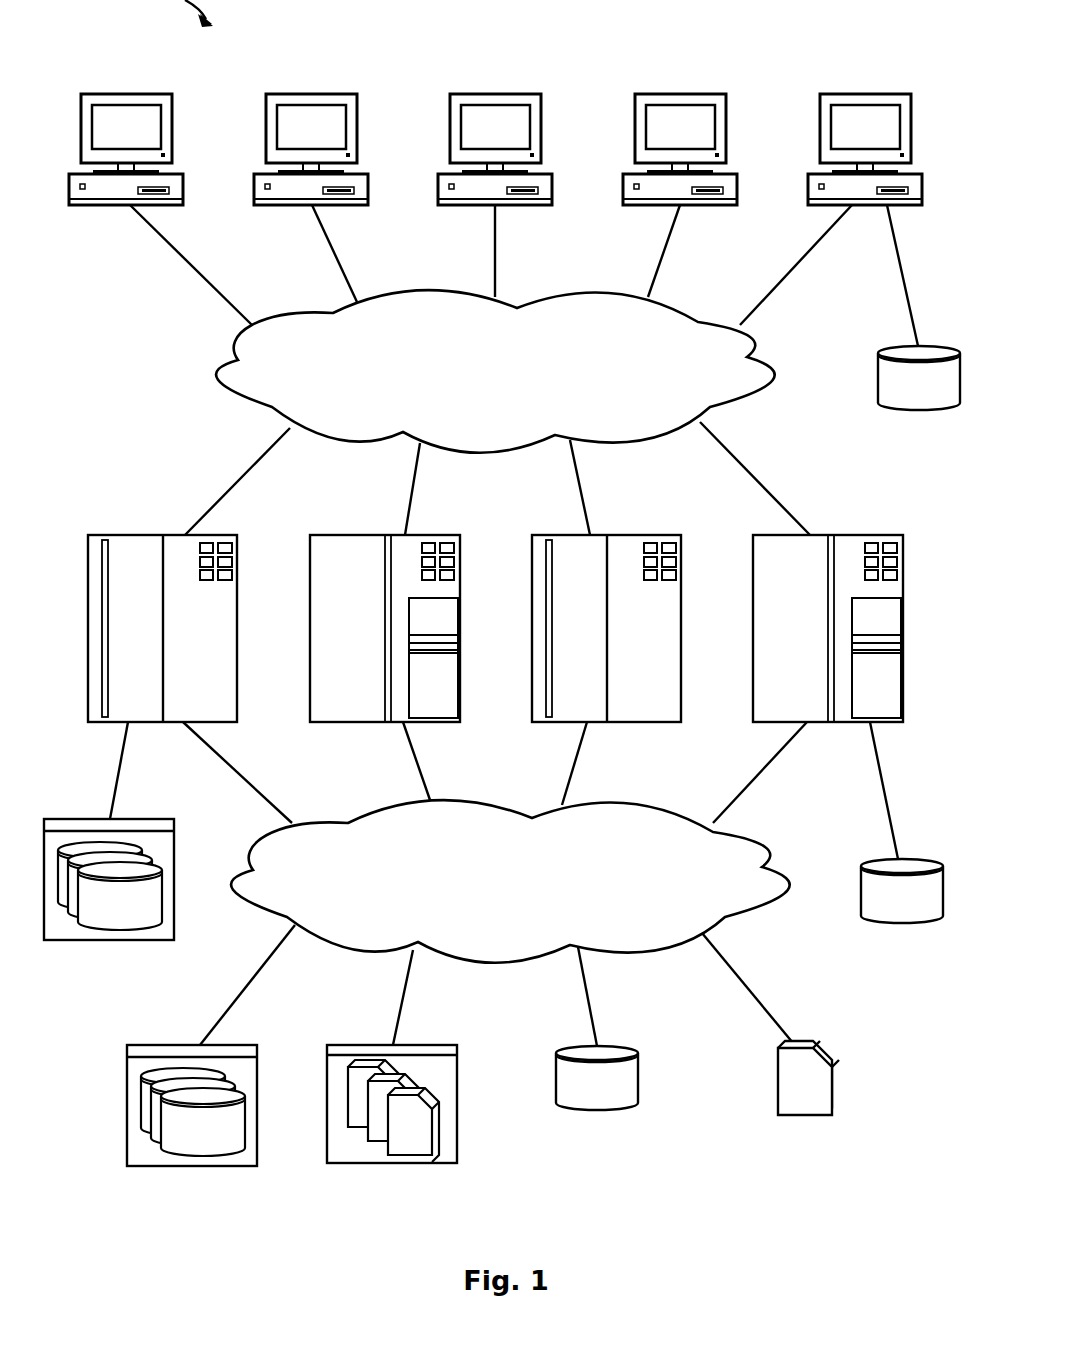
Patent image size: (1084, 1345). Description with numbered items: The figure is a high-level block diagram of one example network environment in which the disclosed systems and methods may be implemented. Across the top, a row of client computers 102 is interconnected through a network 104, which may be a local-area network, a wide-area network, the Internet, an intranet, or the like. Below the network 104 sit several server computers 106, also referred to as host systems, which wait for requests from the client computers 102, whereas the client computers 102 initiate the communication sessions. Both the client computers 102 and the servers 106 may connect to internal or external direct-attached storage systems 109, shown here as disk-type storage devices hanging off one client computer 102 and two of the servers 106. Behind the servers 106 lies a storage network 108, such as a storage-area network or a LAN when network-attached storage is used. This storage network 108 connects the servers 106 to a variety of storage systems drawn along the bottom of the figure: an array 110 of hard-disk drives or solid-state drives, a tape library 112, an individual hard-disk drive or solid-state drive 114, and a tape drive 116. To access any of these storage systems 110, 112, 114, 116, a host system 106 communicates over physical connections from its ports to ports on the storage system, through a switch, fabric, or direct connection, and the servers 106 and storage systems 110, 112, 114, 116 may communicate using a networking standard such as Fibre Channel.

The client computer 102 is at (108, 136).
The network 104 is at (477, 398).
The server computer 106 is at (117, 637).
The storage network 108 is at (497, 908).
The direct-attached storage system 109 is at (920, 411).
The array of hard-disk drives or solid-state drives 110 is at (190, 1164).
The tape library 112 is at (392, 1164).
The individual hard-disk drive or solid-state drive 114 is at (595, 1110).
The tape drive 116 is at (805, 1115).